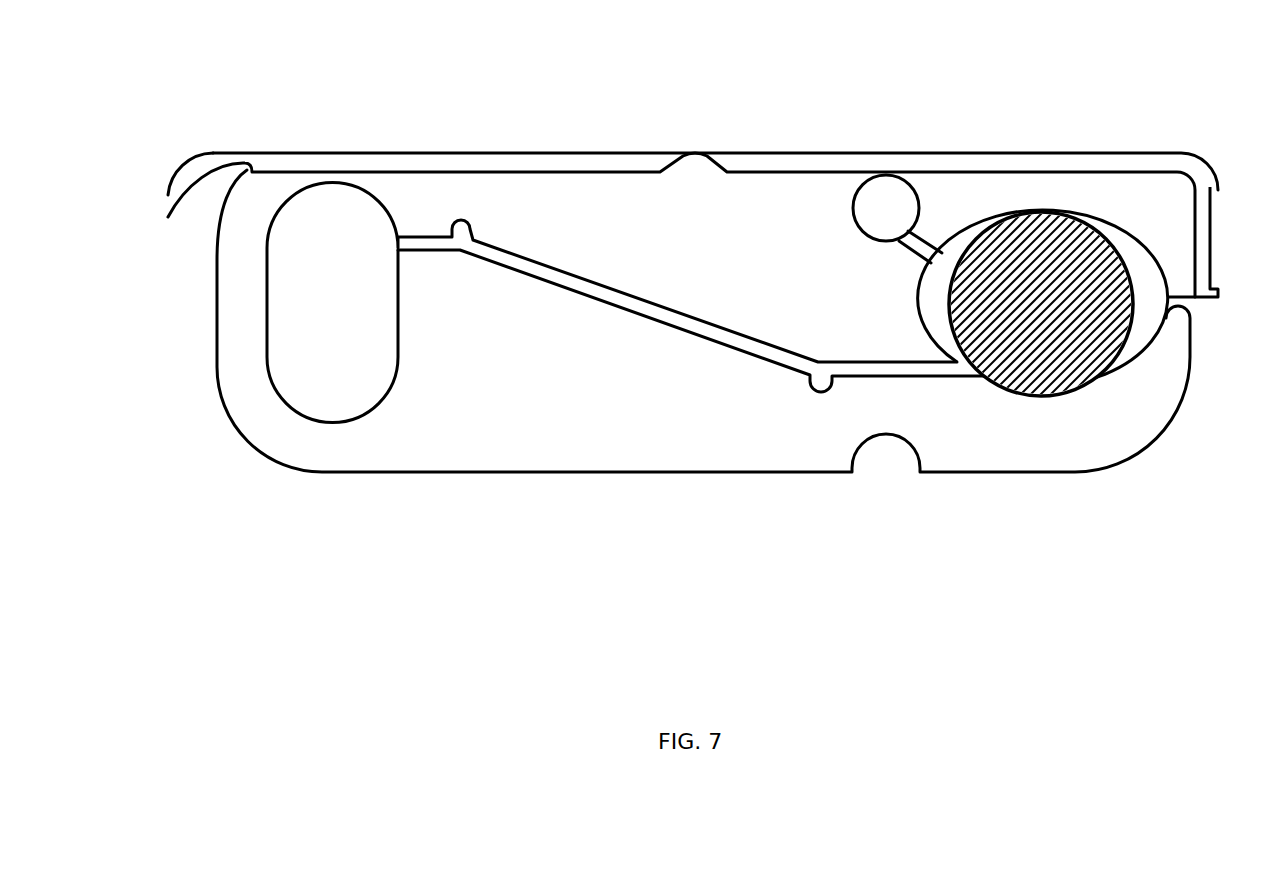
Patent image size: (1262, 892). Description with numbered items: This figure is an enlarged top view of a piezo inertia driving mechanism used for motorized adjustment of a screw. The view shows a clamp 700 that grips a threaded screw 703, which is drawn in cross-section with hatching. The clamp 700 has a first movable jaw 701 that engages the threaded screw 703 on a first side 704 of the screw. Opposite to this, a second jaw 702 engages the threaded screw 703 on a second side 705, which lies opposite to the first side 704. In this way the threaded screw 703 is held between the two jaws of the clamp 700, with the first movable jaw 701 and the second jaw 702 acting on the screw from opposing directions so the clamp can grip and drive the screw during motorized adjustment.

The clamp 700 is at (442, 105).
The first movable jaw 701 is at (1140, 395).
The second jaw 702 is at (1163, 223).
The threaded screw 703 is at (992, 292).
The first side 704 is at (1050, 401).
The second side 705 is at (1031, 207).